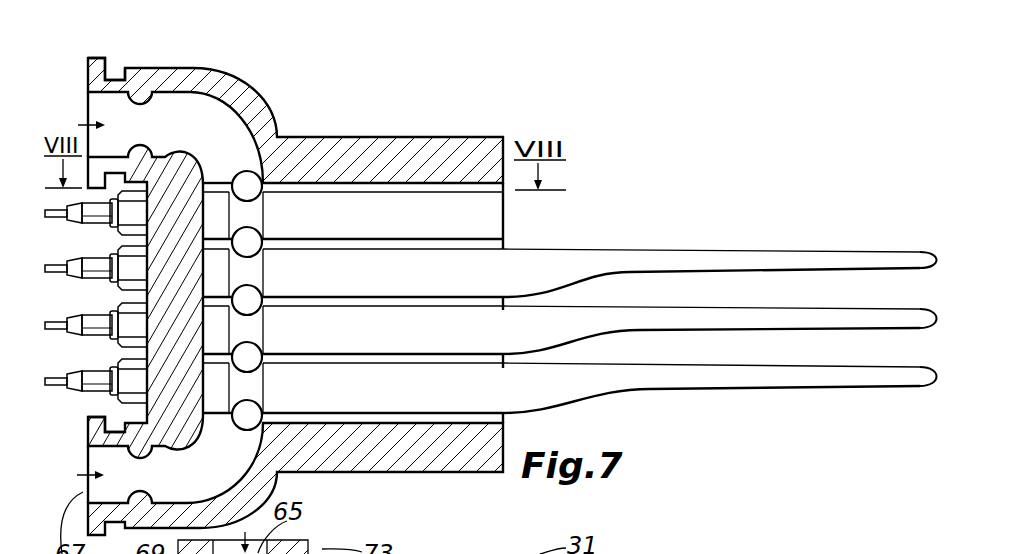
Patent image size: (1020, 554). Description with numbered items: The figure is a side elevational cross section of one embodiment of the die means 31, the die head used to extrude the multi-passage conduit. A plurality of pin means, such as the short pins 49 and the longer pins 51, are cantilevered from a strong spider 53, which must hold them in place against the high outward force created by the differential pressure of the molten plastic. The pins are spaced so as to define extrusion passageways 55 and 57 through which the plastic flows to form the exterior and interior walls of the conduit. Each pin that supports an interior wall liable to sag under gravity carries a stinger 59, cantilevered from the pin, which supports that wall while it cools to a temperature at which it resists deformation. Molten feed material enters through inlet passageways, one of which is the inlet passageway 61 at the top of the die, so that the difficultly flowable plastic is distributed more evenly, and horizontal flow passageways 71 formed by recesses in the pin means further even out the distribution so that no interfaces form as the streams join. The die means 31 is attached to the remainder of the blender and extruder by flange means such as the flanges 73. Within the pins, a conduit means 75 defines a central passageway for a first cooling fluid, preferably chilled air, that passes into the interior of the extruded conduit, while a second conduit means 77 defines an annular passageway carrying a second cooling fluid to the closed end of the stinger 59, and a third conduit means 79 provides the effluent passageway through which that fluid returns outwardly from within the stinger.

The die means 31 is at (460, 72).
The pins 49 is at (487, 214).
The pins 51 is at (480, 277).
The spider 53 is at (157, 300).
The extrusion passageway 55 is at (488, 421).
The extrusion passageway 57 is at (493, 363).
The stinger 59 is at (822, 388).
The inlet passageway 61 is at (95, 107).
The horizontal flow passageway 71 is at (262, 422).
The flanges 73 is at (107, 65).
The conduit means 75 is at (93, 393).
The second conduit means 77 is at (83, 384).
The third conduit means 79 is at (86, 460).